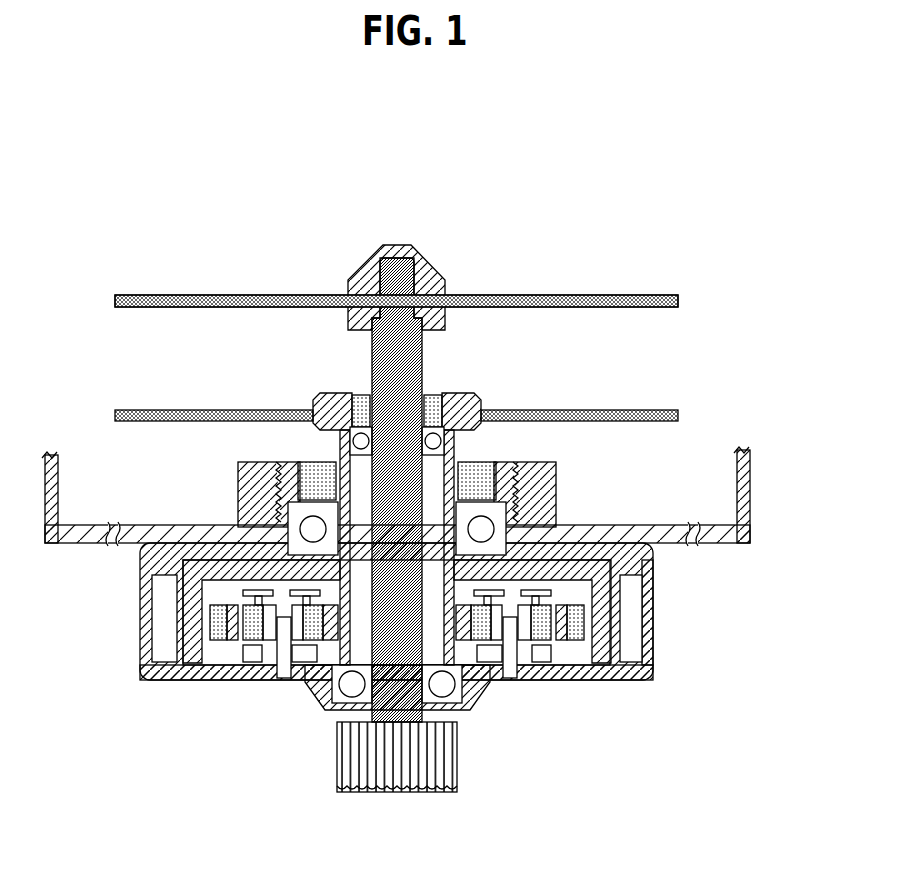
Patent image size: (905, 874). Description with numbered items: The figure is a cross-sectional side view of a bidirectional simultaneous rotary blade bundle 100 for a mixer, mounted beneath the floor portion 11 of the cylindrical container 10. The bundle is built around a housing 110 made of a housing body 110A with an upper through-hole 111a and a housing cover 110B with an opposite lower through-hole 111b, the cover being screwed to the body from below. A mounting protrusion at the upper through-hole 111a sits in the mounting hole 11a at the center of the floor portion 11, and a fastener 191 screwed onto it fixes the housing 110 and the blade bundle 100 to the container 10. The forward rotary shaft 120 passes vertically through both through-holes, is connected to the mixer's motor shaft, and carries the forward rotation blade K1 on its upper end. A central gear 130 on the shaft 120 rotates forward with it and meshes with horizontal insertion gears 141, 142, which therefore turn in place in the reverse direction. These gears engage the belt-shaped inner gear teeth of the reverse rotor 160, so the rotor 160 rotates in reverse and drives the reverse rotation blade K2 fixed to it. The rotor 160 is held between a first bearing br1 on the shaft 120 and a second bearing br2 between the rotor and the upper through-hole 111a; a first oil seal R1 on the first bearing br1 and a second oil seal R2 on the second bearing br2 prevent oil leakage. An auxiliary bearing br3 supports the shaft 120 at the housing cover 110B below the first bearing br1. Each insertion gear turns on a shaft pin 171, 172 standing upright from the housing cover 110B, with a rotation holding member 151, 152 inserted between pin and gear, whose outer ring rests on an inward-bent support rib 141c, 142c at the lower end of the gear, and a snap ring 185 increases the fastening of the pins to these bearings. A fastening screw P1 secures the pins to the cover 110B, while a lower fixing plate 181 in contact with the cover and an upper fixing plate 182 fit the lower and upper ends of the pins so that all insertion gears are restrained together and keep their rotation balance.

The bidirectional simultaneous rotary blade bundle 100 is at (527, 231).
The housing 110 is at (391, 438).
The housing body 110A is at (654, 622).
The housing cover 110B is at (644, 680).
The container 10 is at (738, 484).
The floor portion 11 is at (648, 525).
The mounting hole 11a is at (556, 508).
The forward rotation blade K1 is at (178, 295).
The reverse rotation blade K2 is at (148, 410).
The forward rotary shaft 120 is at (424, 341).
The central gear 130 is at (445, 620).
The first oil seal R1 is at (436, 400).
The second oil seal R2 is at (478, 470).
The first bearing br1 is at (446, 440).
The second bearing br2 is at (556, 487).
The auxiliary bearing br3 is at (443, 690).
The upper through-hole 111a is at (307, 460).
The lower through-hole 111b is at (367, 710).
The snap ring 185 is at (188, 570).
The fastener 191 is at (238, 491).
The reverse rotor 160 is at (188, 569).
The upper fixing plate 182 is at (165, 598).
The rotation holding member 151 is at (212, 622).
The rotation holding member 152 is at (545, 646).
The horizontal insertion gear 141 is at (243, 645).
The horizontal insertion gear 142 is at (618, 668).
The support rib 141c is at (248, 658).
The support rib 142c is at (555, 662).
The shaft pin 171 is at (249, 667).
The shaft pin 172 is at (514, 690).
The fastening screw P1 is at (284, 668).
The lower fixing plate 181 is at (292, 692).